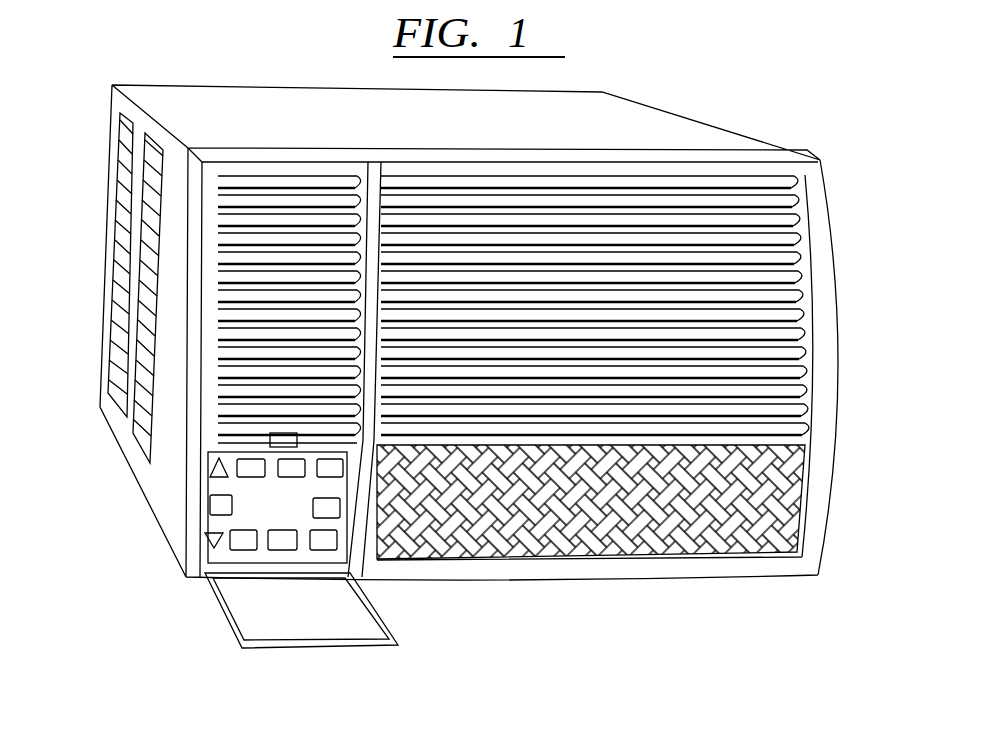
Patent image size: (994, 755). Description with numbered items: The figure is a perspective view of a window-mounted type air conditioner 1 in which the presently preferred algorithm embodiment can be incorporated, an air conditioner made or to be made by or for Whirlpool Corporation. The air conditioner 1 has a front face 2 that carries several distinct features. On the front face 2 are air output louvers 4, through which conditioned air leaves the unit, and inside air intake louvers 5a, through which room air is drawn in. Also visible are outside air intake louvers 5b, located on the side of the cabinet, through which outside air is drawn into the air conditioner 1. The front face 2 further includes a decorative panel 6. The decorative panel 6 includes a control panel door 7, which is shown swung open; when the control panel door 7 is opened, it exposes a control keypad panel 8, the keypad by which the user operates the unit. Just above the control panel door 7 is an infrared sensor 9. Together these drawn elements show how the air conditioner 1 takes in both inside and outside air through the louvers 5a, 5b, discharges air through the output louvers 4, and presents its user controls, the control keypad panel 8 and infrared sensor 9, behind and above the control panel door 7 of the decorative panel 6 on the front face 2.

The air conditioner 1 is at (770, 565).
The front face 2 is at (203, 377).
The air output louvers 4 is at (270, 220).
The inside air intake louvers 5a is at (722, 223).
The outside air intake louvers 5b is at (150, 263).
The decorative panel 6 is at (703, 493).
The control panel door 7 is at (283, 627).
The control keypad panel 8 is at (257, 555).
The infrared sensor 9 is at (287, 437).